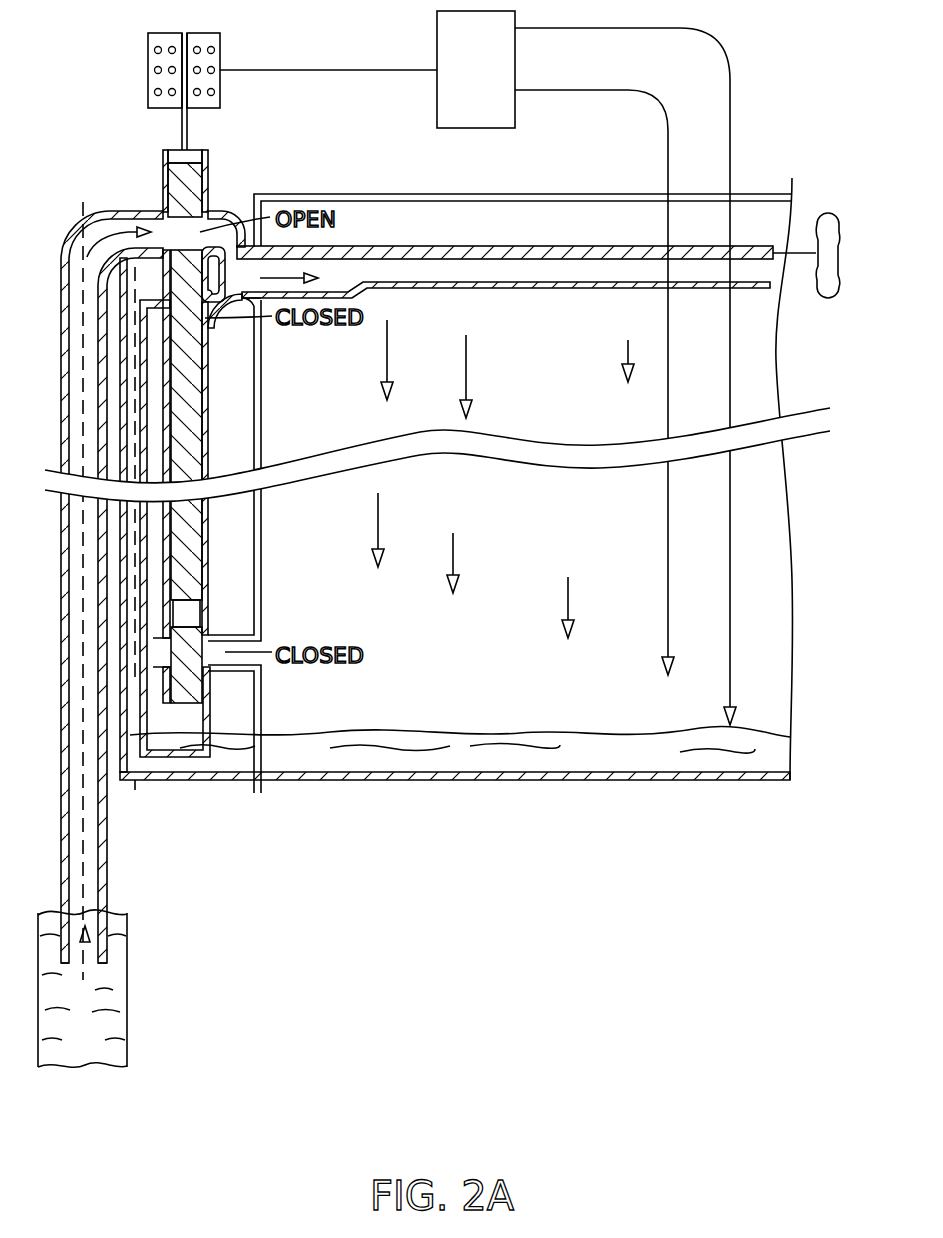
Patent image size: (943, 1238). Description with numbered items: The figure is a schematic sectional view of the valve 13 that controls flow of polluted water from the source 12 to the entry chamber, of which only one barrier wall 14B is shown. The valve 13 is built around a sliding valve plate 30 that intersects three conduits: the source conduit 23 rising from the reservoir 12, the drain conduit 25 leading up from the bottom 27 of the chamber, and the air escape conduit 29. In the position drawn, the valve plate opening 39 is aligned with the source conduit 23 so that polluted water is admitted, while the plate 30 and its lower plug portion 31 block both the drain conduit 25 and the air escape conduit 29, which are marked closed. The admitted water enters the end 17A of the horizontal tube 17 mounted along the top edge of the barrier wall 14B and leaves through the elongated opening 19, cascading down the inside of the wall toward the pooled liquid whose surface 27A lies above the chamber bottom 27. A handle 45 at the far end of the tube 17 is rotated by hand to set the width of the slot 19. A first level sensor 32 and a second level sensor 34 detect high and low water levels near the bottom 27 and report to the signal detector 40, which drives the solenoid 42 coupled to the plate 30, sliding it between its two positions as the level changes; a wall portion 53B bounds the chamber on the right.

The source 12 is at (102, 1048).
The valve 13 is at (103, 172).
The barrier wall 14B is at (541, 537).
The horizontal tube 17 is at (588, 246).
The end of the tube 17A is at (320, 243).
The elongated opening 19 is at (537, 288).
The source conduit 23 is at (61, 712).
The drain conduit 25 is at (120, 567).
The bottom of entry chamber 27 is at (634, 762).
The liquid surface 27A is at (432, 728).
The air escape conduit 29 is at (187, 614).
The valve plate 30 is at (190, 527).
The valve plug 31 is at (218, 637).
The first level sensor 32 is at (663, 665).
The second level sensor 34 is at (727, 718).
The valve plate opening 39 is at (185, 228).
The signal detector 40 is at (492, 83).
The solenoid 42 is at (222, 40).
The handle 45 is at (830, 215).
The chamber wall 53B is at (802, 737).